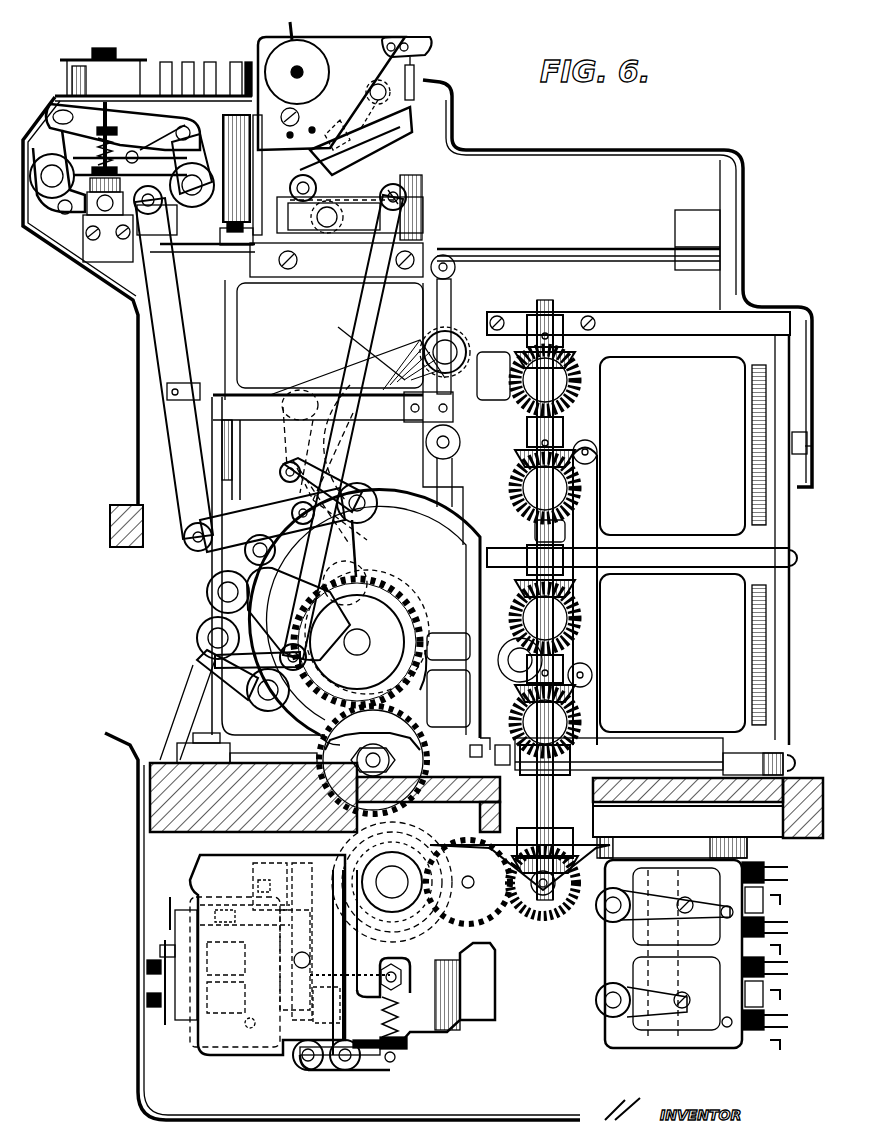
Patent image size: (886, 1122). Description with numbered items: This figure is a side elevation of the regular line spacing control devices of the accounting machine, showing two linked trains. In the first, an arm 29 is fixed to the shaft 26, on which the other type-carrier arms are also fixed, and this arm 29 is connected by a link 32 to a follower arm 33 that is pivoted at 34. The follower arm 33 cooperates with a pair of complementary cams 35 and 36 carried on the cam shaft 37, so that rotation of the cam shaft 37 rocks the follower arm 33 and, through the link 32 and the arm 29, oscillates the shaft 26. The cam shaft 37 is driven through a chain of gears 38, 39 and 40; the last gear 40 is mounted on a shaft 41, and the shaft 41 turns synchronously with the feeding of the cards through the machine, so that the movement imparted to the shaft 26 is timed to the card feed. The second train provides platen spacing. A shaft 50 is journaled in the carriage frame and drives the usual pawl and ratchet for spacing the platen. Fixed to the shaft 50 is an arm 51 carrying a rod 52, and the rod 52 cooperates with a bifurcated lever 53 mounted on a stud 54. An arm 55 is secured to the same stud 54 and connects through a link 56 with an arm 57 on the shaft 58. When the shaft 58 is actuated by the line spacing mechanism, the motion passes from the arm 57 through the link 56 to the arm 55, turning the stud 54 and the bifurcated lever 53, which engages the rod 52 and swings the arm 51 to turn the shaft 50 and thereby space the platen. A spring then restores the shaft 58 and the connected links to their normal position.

The shaft 26 is at (440, 350).
The arm 29 is at (355, 330).
The link 32 is at (355, 548).
The follower arm 33 is at (298, 614).
The pivot 34 is at (207, 592).
The complementary cam 35 is at (378, 575).
The complementary cam 36 is at (398, 588).
The cam shaft 37 is at (360, 640).
The gear 38 is at (410, 680).
The gear 39 is at (345, 733).
The gear 40 is at (410, 830).
The shaft 41 is at (400, 915).
The shaft 50 is at (412, 62).
The arm 51 is at (360, 100).
The rod 52 is at (365, 135).
The bifurcated lever 53 is at (345, 148).
The stud 54 is at (297, 188).
The arm 55 is at (375, 192).
The link 56 is at (357, 354).
The arm 57 is at (260, 655).
The shaft 58 is at (197, 639).